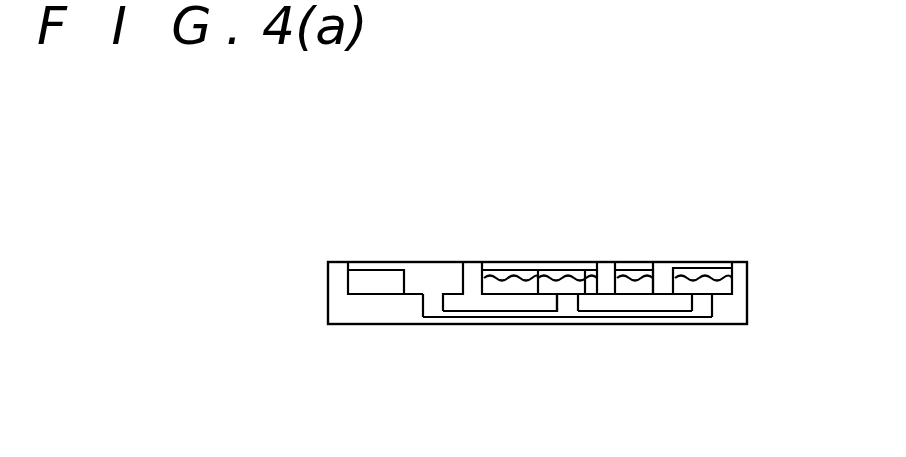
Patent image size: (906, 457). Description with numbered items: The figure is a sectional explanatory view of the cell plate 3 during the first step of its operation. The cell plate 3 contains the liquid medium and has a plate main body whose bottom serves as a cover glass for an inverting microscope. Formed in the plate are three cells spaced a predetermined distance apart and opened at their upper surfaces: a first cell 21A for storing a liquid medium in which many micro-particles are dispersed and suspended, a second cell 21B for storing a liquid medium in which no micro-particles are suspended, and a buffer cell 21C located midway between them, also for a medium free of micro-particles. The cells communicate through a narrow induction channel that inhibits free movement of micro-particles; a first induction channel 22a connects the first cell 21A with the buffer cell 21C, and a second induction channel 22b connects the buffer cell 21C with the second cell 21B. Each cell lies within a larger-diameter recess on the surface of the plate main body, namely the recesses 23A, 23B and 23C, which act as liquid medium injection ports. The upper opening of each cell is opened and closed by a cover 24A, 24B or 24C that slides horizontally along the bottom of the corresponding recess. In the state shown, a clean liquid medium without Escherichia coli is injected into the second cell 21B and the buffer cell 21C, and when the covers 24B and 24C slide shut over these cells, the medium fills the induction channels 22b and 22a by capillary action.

The cell plate 3 is at (343, 261).
The cover 24A is at (372, 262).
The recess 23A is at (422, 262).
The cover 24C is at (492, 262).
The recess 23C is at (585, 268).
The recess 23B is at (652, 268).
The cover 24B is at (712, 262).
The first cell 21A is at (438, 310).
The first induction channel 22a is at (461, 318).
The buffer cell 21C is at (566, 300).
The second induction channel 22b is at (666, 313).
The second cell 21B is at (703, 302).